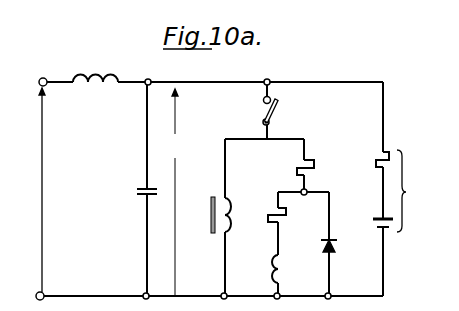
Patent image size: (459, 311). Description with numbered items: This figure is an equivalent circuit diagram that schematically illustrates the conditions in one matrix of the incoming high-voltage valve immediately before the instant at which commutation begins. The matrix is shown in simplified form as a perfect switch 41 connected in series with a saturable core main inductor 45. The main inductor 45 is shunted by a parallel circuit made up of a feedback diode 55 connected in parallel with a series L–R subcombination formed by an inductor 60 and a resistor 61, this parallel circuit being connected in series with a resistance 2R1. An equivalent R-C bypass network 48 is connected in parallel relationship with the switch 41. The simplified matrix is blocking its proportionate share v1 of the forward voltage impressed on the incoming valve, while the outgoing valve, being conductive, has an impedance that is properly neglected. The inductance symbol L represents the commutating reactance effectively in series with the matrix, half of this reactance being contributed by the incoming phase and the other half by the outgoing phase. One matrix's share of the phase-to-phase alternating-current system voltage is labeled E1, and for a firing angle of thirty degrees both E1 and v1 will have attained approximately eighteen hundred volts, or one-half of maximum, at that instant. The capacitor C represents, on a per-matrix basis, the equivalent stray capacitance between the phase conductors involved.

The inductance L is at (93, 85).
The capacitor C is at (136, 190).
The matrix share of phase-to-phase A-C system voltage E1 is at (32, 188).
The proportionate share of forward voltage v1 is at (174, 192).
The switch 41 is at (279, 110).
The saturable core main inductor 45 is at (212, 211).
The resistance 2R1 is at (316, 160).
The resistor of series L–R subcombination 61 is at (268, 214).
The inductor of series L–R subcombination 60 is at (272, 264).
The feedback diode 55 is at (337, 248).
The equivalent R-C bypass network 48 is at (432, 204).